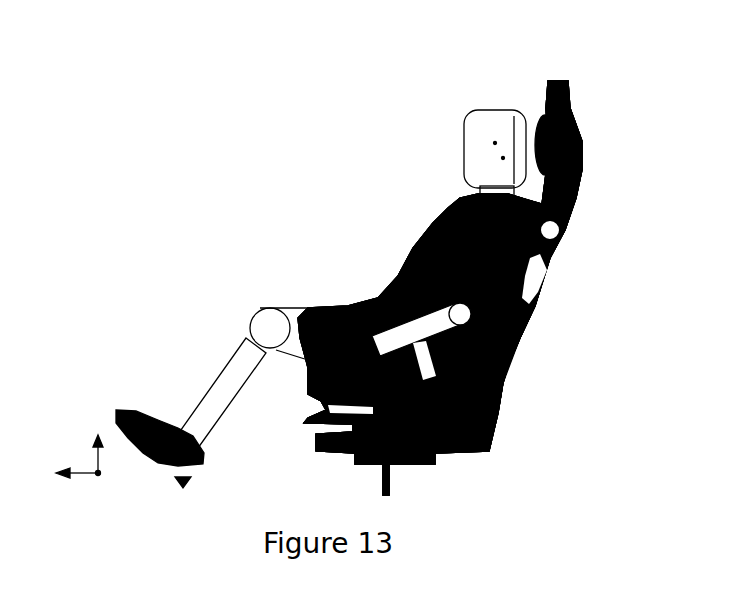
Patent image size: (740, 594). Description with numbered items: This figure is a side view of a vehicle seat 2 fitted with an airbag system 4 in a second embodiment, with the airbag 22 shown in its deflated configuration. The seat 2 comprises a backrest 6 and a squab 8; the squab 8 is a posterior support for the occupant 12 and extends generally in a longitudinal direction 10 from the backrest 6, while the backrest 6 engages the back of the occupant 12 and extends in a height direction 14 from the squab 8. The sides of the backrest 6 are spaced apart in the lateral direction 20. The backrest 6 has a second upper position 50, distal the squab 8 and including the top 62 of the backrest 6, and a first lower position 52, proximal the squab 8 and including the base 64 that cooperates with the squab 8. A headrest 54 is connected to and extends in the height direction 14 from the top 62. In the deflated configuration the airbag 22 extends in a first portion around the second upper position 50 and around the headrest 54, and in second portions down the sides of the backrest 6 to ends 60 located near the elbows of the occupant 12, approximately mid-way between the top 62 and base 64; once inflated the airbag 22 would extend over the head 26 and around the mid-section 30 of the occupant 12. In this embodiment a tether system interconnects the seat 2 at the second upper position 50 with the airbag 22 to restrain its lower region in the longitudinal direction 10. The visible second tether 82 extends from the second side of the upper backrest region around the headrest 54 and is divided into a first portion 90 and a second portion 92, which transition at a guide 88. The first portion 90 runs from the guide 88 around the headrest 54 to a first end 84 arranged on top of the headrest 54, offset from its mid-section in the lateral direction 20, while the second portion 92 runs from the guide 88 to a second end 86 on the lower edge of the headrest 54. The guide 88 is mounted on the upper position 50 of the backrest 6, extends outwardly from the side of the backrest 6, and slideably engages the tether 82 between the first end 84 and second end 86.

The vehicle seat 2 is at (608, 442).
The airbag system 4 is at (494, 62).
The backrest 6 is at (530, 322).
The squab 8 is at (300, 395).
The longitudinal direction 10 is at (63, 477).
The occupant 12 is at (396, 218).
The height direction 14 is at (90, 440).
The lateral direction 20 is at (95, 477).
The airbag 22 is at (562, 108).
The head 26 is at (466, 128).
The mid-section 30 is at (412, 272).
The second upper position 50 is at (598, 231).
The first lower position 52 is at (528, 375).
The headrest 54 is at (578, 140).
The ends 60 is at (540, 285).
The top 62 is at (574, 214).
The base 64 is at (505, 362).
The second tether 82 is at (602, 198).
The first end 84 is at (548, 92).
The second end 86 is at (578, 170).
The guide 88 is at (560, 240).
The first portion 90 is at (546, 122).
The second portion 92 is at (574, 195).